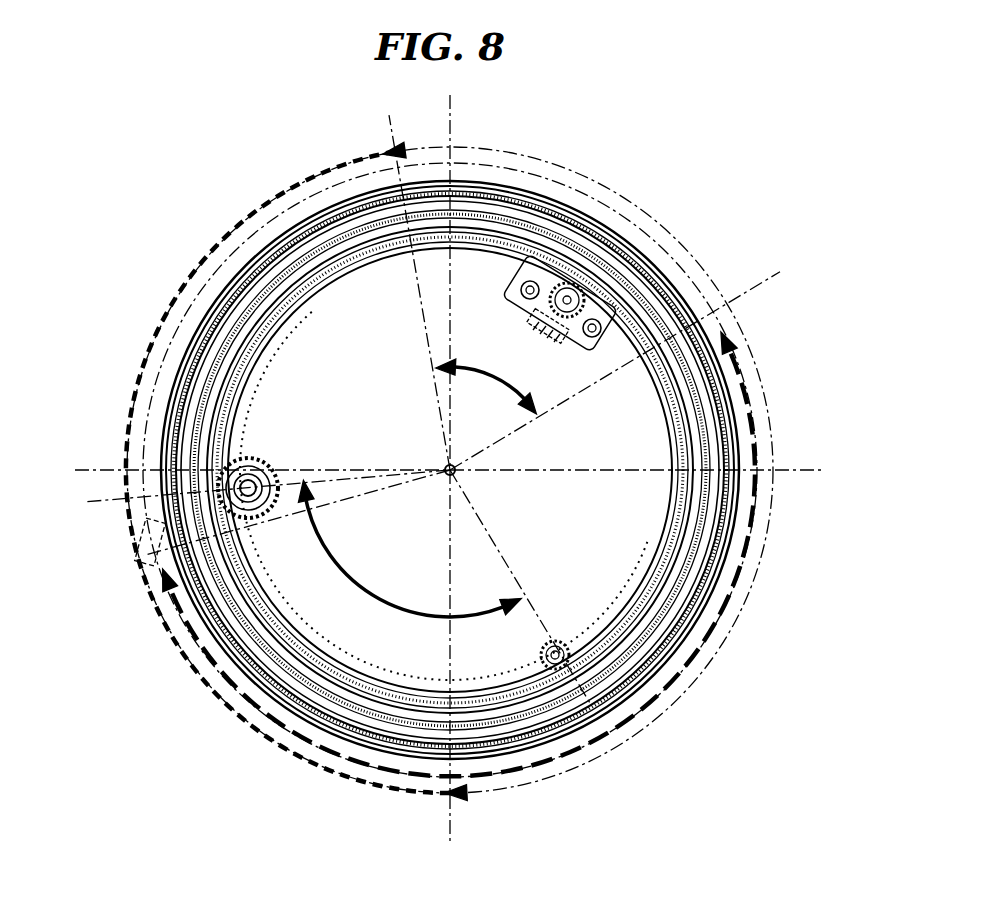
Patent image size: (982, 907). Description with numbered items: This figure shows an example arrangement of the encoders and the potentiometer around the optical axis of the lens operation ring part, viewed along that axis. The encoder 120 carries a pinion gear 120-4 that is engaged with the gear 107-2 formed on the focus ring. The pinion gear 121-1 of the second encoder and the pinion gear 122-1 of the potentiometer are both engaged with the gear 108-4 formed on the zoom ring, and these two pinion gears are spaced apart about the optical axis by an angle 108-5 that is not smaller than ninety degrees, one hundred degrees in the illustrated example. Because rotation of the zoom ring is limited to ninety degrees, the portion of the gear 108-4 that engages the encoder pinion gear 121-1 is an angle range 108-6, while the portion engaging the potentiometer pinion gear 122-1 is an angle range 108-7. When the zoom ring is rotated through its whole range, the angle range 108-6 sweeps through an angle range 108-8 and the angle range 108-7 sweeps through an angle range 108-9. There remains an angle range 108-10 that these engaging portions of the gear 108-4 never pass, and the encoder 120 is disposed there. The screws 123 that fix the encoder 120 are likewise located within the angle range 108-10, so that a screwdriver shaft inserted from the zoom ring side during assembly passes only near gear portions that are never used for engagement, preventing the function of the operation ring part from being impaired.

The gear 107-2 is at (650, 378).
The gear 108-4 is at (378, 260).
The angle 108-5 is at (392, 600).
The angle range 108-6 is at (700, 640).
The angle range 108-7 is at (140, 540).
The angle range 108-8 is at (656, 714).
The angle range 108-9 is at (240, 217).
The angle range 108-10 is at (492, 369).
The encoder 120 is at (530, 300).
The pinion gear 120-4 is at (570, 292).
The pinion gear 121-1 is at (558, 643).
The pinion gear 122-1 is at (268, 462).
The screws 123 is at (532, 281).